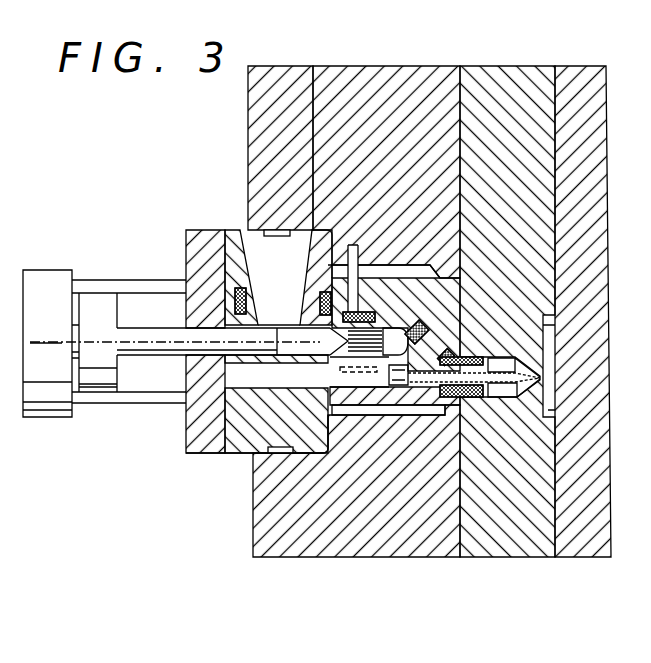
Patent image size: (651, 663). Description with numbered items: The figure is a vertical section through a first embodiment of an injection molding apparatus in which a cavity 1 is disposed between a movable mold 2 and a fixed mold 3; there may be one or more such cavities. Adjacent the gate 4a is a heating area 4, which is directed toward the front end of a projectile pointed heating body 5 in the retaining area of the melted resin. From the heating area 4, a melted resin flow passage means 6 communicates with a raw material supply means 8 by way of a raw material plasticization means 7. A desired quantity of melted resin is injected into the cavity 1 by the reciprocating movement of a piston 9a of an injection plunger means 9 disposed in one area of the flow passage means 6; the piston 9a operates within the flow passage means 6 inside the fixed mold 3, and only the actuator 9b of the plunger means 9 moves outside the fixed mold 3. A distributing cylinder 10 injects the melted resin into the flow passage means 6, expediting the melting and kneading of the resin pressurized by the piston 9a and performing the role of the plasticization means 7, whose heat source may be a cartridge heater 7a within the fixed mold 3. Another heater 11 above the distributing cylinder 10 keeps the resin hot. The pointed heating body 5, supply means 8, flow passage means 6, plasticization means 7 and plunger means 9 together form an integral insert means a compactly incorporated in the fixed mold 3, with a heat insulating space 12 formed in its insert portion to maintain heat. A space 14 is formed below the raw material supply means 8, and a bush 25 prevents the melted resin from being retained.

The cavity 1 is at (546, 348).
The movable mold 2 is at (590, 441).
The fixed mold 3 is at (557, 568).
The heating area 4 is at (502, 360).
The gate 4a is at (543, 380).
The projectile pointed heating body 5 is at (505, 385).
The melted resin flow passage means 6 is at (447, 352).
The raw material plasticization means 7 is at (273, 303).
The cartridge heater 7a is at (305, 290).
The raw material supply means 8 is at (268, 250).
The injection plunger means 9 is at (55, 456).
The piston 9a is at (178, 347).
The actuator 9b is at (52, 403).
The distributing cylinder 10 is at (377, 332).
The heater 11 is at (351, 268).
The heat insulating space 12 is at (387, 275).
The space 14 is at (338, 437).
The bush 25 is at (471, 393).
The integral insert means a is at (265, 428).